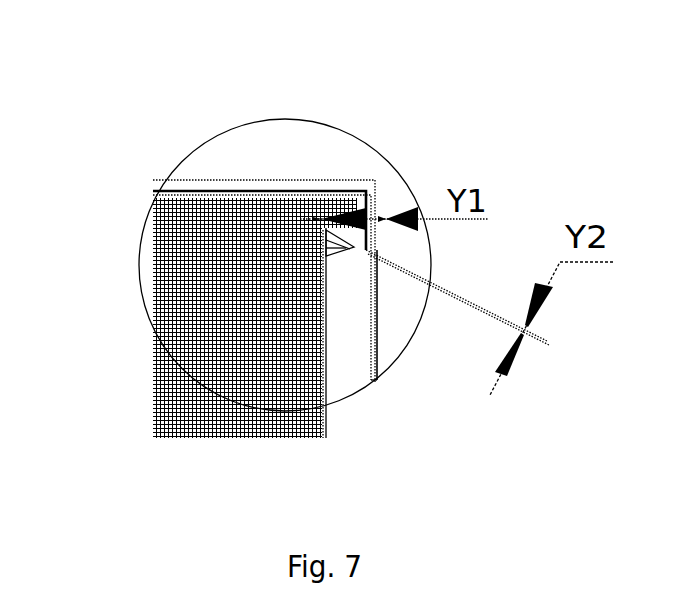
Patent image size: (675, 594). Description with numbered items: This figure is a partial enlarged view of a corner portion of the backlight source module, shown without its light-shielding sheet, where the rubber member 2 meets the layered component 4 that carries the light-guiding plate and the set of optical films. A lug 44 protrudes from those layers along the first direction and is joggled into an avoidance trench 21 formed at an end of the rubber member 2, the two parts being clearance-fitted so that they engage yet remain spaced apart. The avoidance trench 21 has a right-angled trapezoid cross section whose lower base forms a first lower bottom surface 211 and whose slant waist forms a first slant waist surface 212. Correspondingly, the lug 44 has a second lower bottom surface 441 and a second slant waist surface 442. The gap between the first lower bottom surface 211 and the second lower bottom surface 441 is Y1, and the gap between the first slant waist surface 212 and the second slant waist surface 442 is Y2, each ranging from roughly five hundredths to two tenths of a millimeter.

The rubber member 2 is at (345, 342).
The avoidance trench 21 is at (372, 263).
The first lower bottom surface 211 is at (370, 190).
The first slant waist surface 212 is at (325, 253).
The housing 4 is at (225, 223).
The lug 44 is at (345, 198).
The second lower bottom surface 441 is at (355, 195).
The second slant waist surface 442 is at (323, 267).